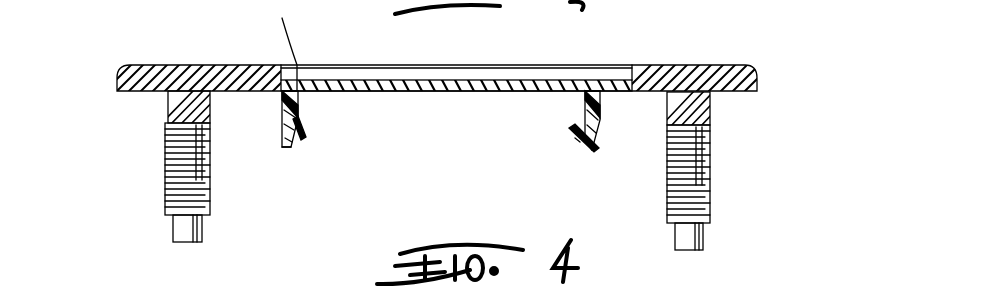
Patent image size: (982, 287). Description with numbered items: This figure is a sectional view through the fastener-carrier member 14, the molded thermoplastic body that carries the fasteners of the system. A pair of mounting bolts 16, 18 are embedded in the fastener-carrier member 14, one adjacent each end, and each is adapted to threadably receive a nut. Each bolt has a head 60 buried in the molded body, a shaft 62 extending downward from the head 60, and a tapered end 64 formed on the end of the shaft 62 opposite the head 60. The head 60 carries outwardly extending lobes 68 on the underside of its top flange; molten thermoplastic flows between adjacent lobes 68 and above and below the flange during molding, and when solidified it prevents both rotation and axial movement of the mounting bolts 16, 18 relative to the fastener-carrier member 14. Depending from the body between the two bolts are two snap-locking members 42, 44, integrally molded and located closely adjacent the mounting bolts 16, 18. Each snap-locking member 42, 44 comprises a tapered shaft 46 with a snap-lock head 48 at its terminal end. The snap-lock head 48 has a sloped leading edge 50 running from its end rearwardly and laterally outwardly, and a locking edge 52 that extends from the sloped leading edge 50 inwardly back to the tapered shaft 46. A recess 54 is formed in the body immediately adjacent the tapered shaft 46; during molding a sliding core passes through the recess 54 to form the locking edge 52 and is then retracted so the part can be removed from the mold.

The fastener-carrier member 14 is at (856, 266).
The mounting bolt 16 is at (160, 177).
The mounting bolt 18 is at (722, 153).
The snap-locking member 42 is at (275, 137).
The snap-locking member 44 is at (608, 133).
The tapered shaft 46 is at (280, 108).
The snap-lock head 48 is at (312, 134).
The sloped leading edge 50 is at (296, 138).
The locking edge 52 is at (302, 127).
The recess 54 is at (578, 88).
The head 60 is at (137, 65).
The shaft 62 is at (205, 197).
The tapered end 64 is at (203, 232).
The lobes 68 is at (62, 278).